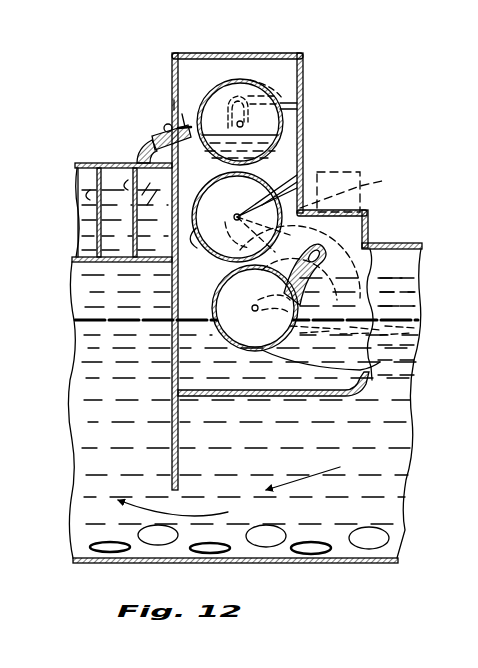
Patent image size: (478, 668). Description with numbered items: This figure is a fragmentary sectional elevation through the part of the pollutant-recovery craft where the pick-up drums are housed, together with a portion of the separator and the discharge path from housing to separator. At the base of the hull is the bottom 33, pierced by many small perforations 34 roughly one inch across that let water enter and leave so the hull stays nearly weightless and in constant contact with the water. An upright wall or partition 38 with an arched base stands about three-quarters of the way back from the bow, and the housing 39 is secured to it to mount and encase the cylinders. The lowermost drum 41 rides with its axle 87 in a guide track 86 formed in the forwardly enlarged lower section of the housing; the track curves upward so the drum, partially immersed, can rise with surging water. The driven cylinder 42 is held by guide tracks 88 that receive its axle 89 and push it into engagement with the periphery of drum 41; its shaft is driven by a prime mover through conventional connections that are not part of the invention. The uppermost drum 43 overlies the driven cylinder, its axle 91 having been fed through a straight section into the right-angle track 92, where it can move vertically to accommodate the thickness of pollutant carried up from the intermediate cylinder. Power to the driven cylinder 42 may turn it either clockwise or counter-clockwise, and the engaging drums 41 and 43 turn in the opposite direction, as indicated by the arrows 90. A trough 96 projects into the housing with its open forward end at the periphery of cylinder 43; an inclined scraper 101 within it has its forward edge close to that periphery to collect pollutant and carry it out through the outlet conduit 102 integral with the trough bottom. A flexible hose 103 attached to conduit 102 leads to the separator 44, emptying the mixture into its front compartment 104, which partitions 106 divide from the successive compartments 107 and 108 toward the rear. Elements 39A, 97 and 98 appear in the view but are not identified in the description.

The bottom 33 is at (291, 562).
The perforations 34 is at (378, 532).
The partition 38 is at (172, 92).
The housing 39 is at (305, 130).
The housing ledge 39A is at (373, 283).
The lowermost drum 41 is at (406, 368).
The driven cylinder 42 is at (193, 244).
The uppermost drum 43 is at (243, 126).
The separator 44 is at (89, 163).
The guide tracks 86 is at (322, 250).
The axle 87 is at (257, 311).
The guide tracks 88 is at (359, 174).
The axle 89 is at (238, 216).
The arrows 90 is at (267, 245).
The roller arm 91 is at (264, 205).
The right-angle track 92 is at (302, 104).
The trough 96 is at (166, 125).
The housing corner 97 is at (173, 63).
The link 98 is at (173, 120).
The inclined scraper 101 is at (181, 134).
The outlet conduit 102 is at (160, 138).
The flexible hose 103 is at (138, 152).
The front compartment 104 is at (150, 211).
The partitions 106 is at (126, 214).
The compartment 107 is at (112, 182).
The compartment 108 is at (86, 176).